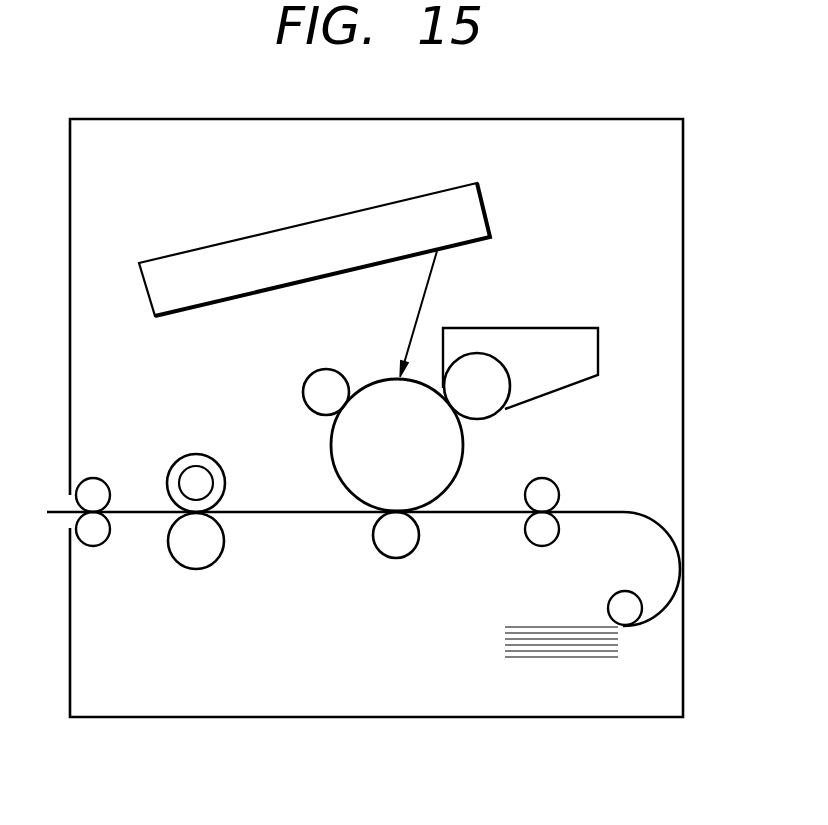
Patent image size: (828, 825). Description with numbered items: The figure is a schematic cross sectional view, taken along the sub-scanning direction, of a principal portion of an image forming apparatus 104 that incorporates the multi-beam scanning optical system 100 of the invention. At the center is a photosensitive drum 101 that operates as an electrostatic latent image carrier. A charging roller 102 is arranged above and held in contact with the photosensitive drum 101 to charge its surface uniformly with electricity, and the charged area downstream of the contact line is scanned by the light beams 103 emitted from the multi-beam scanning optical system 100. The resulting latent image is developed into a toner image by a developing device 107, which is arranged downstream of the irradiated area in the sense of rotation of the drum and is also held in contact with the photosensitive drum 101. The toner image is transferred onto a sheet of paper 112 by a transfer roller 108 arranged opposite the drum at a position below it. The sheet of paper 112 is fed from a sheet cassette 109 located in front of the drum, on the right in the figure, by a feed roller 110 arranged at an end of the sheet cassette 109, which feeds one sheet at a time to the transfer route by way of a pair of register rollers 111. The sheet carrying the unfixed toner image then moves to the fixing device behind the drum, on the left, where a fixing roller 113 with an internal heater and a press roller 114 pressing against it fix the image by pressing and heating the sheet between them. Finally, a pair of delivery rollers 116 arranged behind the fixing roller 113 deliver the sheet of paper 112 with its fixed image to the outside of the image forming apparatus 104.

The multi-beam scanning optical system 100 is at (470, 213).
The photosensitive drum 101 is at (450, 448).
The charging roller 102 is at (323, 377).
The light beams 103 is at (425, 292).
The image forming apparatus 104 is at (627, 116).
The developing device 107 is at (543, 337).
The transfer roller 108 is at (392, 552).
The sheet cassette 109 is at (533, 657).
The feed roller 110 is at (623, 595).
The register rollers 111 is at (543, 480).
The sheet of paper 112 is at (317, 510).
The fixing roller 113 is at (197, 458).
The press roller 114 is at (198, 563).
The delivery rollers 116 is at (90, 485).